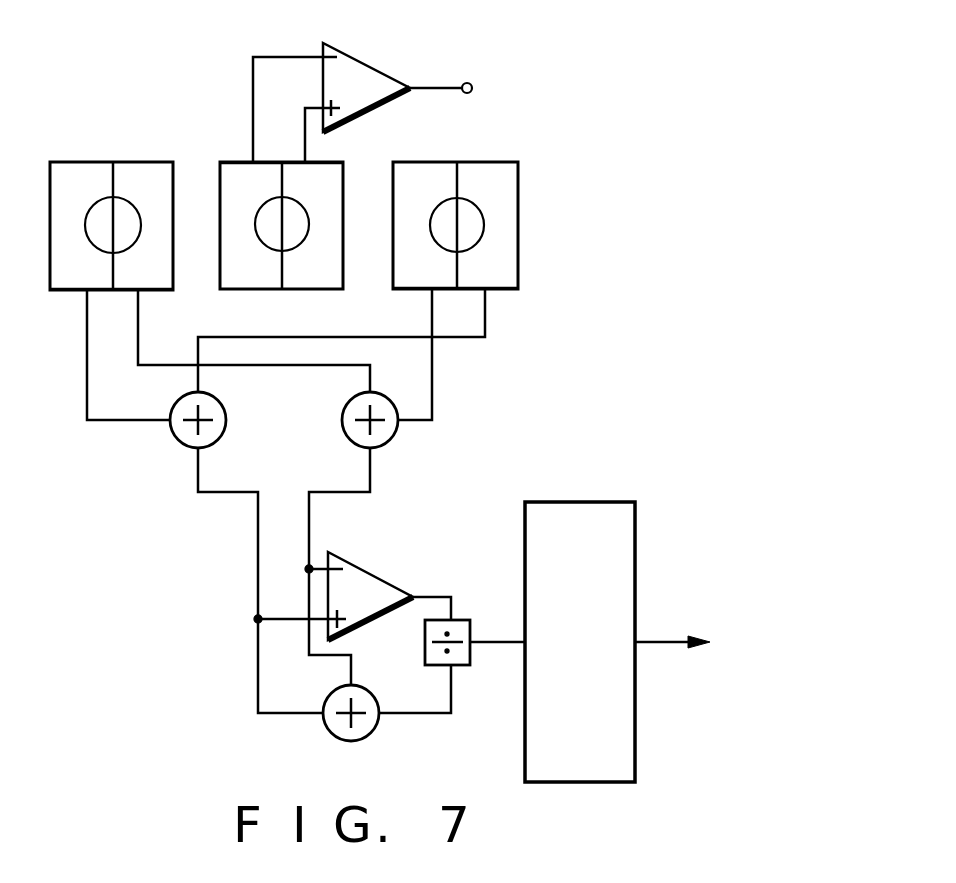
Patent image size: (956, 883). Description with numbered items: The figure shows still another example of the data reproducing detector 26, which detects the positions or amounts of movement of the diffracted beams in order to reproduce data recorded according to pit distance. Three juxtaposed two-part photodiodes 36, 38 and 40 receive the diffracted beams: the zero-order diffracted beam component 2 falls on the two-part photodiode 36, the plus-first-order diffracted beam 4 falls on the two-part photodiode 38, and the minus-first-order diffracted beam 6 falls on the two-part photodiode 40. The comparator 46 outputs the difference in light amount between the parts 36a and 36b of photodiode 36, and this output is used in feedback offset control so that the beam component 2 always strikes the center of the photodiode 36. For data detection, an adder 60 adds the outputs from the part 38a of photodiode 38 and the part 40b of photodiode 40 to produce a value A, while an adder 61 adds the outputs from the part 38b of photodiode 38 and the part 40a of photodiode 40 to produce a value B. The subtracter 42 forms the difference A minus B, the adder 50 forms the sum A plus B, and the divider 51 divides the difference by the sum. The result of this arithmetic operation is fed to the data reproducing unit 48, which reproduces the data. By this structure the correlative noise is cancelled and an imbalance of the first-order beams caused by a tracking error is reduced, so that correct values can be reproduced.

The data reproducing detector 26 is at (165, 117).
The two-part photodiode 38 is at (80, 162).
The part of photodiode 38a is at (108, 279).
The part of photodiode 38b is at (168, 279).
The +1st-order diffracted beam 4 is at (136, 210).
The two-part photodiode 36 is at (246, 290).
The part of photodiode 36a is at (278, 195).
The part of photodiode 36b is at (338, 195).
The 0-order diffracted beam component 2 is at (305, 236).
The two-part photodiode 40 is at (424, 162).
The part of photodiode 40a is at (450, 279).
The part of photodiode 40b is at (514, 279).
The −1st-order diffracted beam 6 is at (481, 211).
The comparator 46 is at (386, 76).
The adder 60 is at (171, 434).
The adder 61 is at (388, 435).
The subtracter 42 is at (370, 580).
The divider 51 is at (465, 622).
The adder 50 is at (368, 727).
The data reproducing unit 48 is at (636, 712).